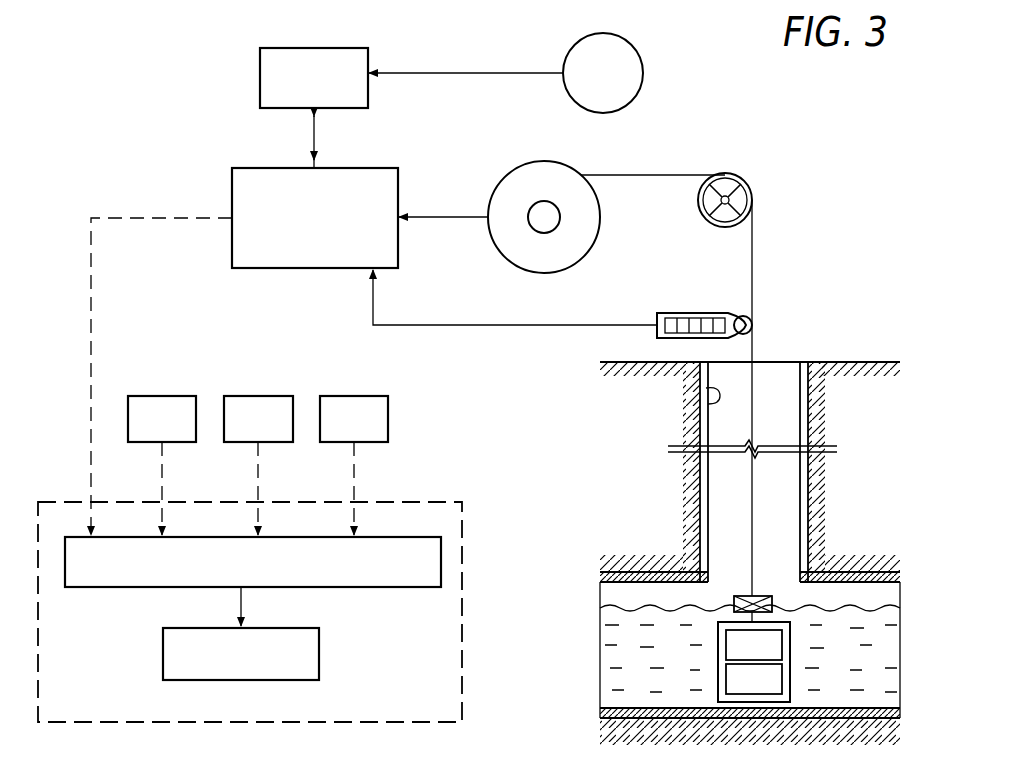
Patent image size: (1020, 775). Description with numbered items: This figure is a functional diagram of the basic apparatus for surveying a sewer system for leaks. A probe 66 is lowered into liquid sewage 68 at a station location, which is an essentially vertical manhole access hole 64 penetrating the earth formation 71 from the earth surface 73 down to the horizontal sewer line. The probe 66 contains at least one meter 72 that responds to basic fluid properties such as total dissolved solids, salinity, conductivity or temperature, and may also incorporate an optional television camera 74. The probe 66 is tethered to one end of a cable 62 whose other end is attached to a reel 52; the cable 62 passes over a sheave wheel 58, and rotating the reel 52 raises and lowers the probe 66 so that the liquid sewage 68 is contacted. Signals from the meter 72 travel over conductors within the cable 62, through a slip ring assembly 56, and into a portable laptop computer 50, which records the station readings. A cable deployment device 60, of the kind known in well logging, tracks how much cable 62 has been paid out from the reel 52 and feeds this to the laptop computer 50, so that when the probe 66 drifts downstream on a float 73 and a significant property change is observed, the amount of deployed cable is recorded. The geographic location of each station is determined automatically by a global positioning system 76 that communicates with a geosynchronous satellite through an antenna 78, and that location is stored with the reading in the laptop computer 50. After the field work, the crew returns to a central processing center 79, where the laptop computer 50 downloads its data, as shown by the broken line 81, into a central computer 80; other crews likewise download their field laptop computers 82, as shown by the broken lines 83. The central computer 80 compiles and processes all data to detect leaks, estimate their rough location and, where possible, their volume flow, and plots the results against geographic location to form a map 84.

The laptop computer 50 is at (232, 175).
The reel 52 is at (542, 162).
The slip ring assembly 56 is at (552, 220).
The sheave wheel 58 is at (749, 187).
The cable deployment device 60 is at (695, 313).
The cable 62 is at (754, 276).
The manhole access hole 64 is at (700, 402).
The probe 66 is at (790, 626).
The liquid sewage 68 is at (678, 634).
The earth formation 71 is at (828, 490).
The meter 72 is at (782, 646).
The earth surface / float 73 is at (848, 362).
The television camera 74 is at (782, 683).
The global positioning system 76 is at (260, 72).
The antenna 78 is at (644, 73).
The central processing center 79 is at (465, 546).
The central computer 80 is at (388, 587).
The broken line 81 is at (93, 310).
The field laptop computers 82 is at (243, 396).
The broken lines 83 is at (163, 478).
The map 84 is at (321, 660).